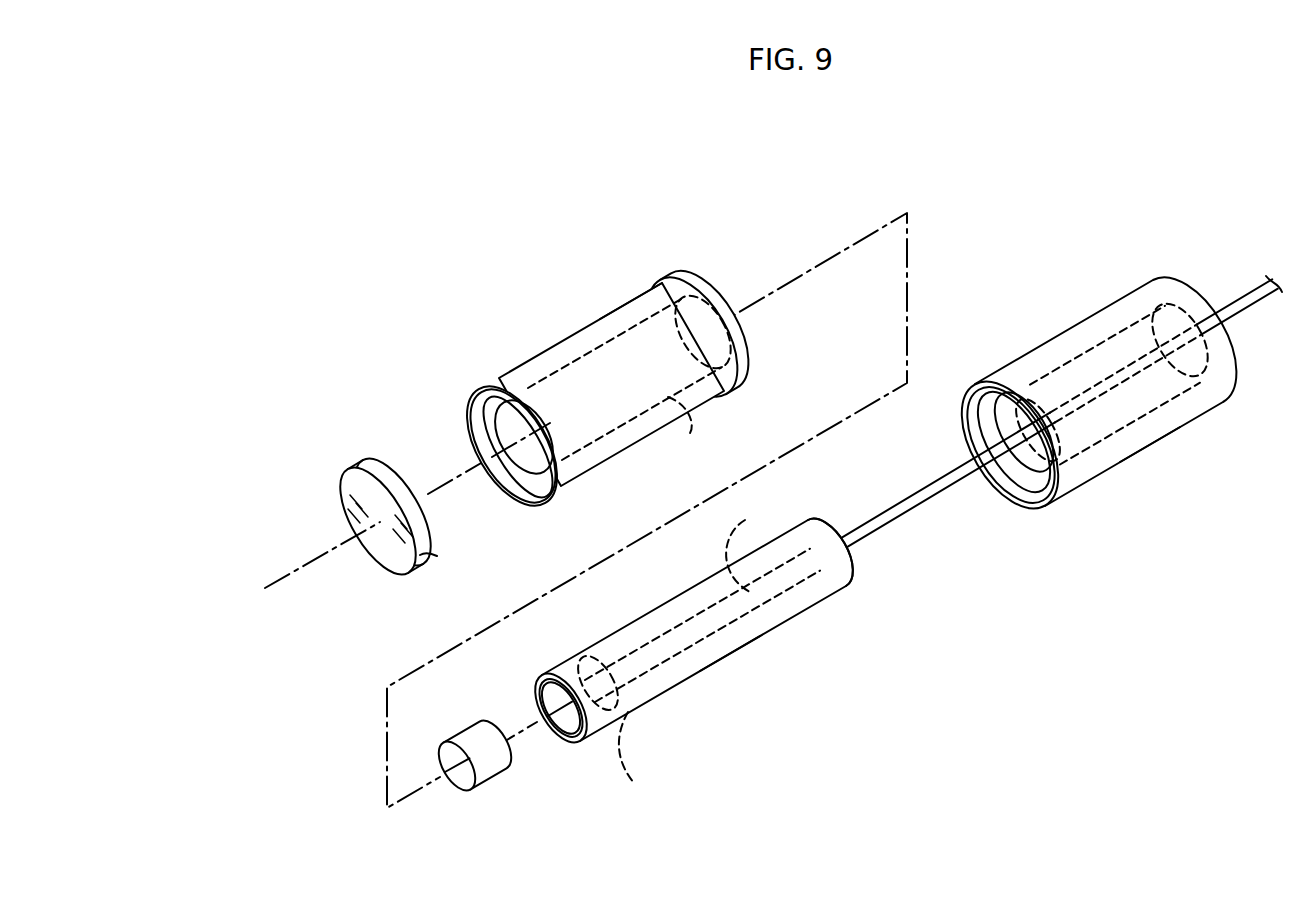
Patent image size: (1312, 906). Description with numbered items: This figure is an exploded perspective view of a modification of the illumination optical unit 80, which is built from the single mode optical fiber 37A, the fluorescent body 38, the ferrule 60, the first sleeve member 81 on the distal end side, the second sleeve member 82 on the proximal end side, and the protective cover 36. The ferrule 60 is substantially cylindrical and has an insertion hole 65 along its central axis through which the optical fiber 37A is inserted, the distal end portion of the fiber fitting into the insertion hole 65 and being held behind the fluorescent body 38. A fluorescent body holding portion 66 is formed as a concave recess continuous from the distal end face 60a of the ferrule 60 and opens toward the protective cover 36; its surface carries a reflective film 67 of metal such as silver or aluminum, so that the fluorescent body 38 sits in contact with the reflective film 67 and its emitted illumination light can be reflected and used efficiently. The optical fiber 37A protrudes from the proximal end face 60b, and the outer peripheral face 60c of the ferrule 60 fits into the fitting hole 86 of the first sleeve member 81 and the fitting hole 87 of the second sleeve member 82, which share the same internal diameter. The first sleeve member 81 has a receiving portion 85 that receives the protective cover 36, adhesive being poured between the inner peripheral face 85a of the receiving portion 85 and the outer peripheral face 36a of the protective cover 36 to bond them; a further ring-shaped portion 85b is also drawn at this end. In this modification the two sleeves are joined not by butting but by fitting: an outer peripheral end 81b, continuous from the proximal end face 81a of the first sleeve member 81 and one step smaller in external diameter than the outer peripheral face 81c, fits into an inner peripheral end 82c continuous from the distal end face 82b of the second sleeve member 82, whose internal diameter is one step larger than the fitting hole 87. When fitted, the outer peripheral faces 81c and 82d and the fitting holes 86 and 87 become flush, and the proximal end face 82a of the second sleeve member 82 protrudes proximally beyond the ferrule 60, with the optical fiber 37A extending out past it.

The illumination optical unit 80 is at (272, 306).
The protective cover 36 is at (350, 477).
The outer peripheral face 36a is at (432, 558).
The fluorescent body 38 is at (496, 766).
The ferrule 60 is at (668, 635).
The distal end face 60a is at (540, 690).
The proximal end face 60b is at (820, 518).
The outer peripheral face 60c is at (770, 630).
The insertion hole 65 is at (750, 542).
The fluorescent body holding portion 66 is at (636, 763).
The reflective film 67 is at (568, 718).
The single mode optical fiber 37A is at (890, 517).
The first sleeve member 81 is at (610, 364).
The proximal end face 81a is at (749, 330).
The outer peripheral end 81b is at (725, 296).
The outer peripheral face 81c is at (642, 307).
The receiving portion 85 is at (481, 396).
The inner peripheral face 85a is at (478, 432).
The inner ring 85b is at (497, 400).
The fitting hole 86 is at (694, 430).
The second sleeve member 82 is at (1093, 393).
The proximal end face 82a is at (1198, 297).
The distal end face 82b is at (982, 380).
The inner peripheral end 82c is at (1024, 485).
The outer peripheral face 82d is at (1165, 415).
The fitting hole 87 is at (1043, 457).